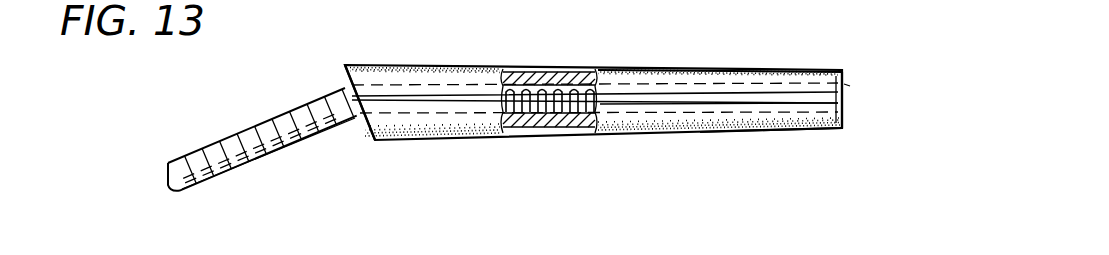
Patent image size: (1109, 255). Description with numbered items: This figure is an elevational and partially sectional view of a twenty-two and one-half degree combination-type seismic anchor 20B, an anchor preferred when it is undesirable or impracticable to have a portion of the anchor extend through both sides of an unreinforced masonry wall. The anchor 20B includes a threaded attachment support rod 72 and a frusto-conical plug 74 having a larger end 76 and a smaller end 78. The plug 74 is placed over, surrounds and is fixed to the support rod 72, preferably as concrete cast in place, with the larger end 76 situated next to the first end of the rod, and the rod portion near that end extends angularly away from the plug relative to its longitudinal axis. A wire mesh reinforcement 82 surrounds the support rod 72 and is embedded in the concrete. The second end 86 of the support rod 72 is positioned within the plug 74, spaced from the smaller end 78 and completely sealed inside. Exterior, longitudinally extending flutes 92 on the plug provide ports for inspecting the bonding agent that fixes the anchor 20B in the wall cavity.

The seismic anchor 20B is at (437, 58).
The threaded attachment support rod 72 is at (548, 74).
The frusto-conical plug 74 is at (725, 70).
The wire mesh reinforcement 82 is at (800, 70).
The second end of the support rod 86 is at (849, 86).
The smaller end of the plug 78 is at (846, 124).
The flutes 92 is at (722, 104).
The larger end of the plug 76 is at (365, 122).